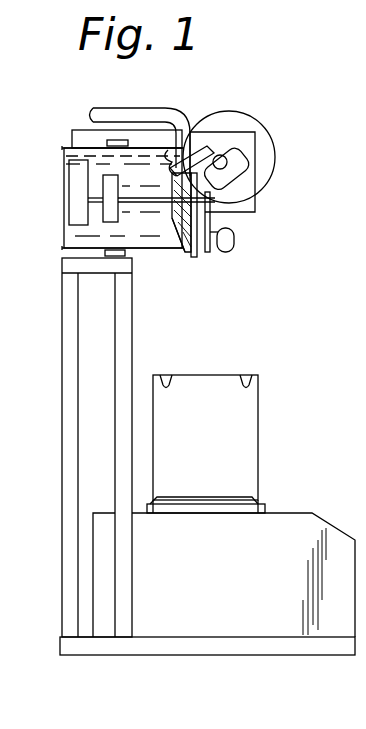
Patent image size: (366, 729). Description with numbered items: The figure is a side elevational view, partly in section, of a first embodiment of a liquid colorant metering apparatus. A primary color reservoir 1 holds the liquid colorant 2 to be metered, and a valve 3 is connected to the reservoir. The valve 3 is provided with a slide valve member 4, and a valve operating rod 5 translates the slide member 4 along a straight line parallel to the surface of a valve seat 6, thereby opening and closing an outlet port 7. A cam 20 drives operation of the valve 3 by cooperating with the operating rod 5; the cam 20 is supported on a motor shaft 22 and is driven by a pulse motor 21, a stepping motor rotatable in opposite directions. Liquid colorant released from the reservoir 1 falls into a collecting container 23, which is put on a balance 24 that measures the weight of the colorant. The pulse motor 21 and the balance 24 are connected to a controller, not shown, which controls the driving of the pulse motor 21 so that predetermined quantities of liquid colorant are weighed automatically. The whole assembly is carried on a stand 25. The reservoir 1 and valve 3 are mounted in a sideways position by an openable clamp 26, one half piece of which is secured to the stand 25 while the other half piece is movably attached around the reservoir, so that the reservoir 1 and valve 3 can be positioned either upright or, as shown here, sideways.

The primary color reservoir 1 is at (64, 158).
The liquid colorant 2 is at (64, 236).
The valve 3 is at (200, 252).
The slide valve member 4 is at (205, 248).
The valve operating rod 5 is at (204, 148).
The valve seat 6 is at (215, 220).
The outlet port 7 is at (182, 250).
The cam 20 is at (240, 152).
The pulse motor 21 is at (262, 112).
The motor shaft 22 is at (243, 178).
The collecting container 23 is at (258, 425).
The balance 24 is at (314, 512).
The stand 25 is at (62, 440).
The openable clamp 26 is at (113, 138).